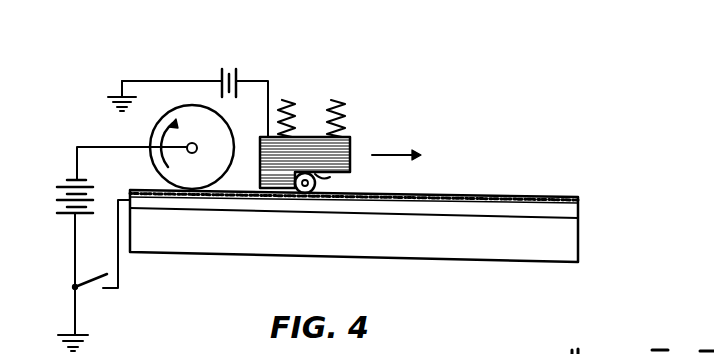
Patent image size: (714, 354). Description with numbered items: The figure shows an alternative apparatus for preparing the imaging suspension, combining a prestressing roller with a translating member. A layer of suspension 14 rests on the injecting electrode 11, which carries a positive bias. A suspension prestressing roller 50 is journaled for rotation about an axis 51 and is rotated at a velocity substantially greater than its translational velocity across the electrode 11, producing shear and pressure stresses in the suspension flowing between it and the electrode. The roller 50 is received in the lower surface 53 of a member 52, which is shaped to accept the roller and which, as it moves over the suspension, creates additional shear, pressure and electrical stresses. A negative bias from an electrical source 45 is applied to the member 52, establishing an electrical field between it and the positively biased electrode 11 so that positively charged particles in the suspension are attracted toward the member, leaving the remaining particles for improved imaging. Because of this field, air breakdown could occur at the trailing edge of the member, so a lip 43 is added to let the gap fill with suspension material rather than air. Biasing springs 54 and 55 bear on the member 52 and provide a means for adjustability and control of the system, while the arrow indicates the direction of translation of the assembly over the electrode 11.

The injecting electrode 11 is at (386, 214).
The suspension 14 is at (367, 214).
The lip 43 is at (262, 192).
The electrical source 45 is at (216, 58).
The suspension prestressing roller 50 is at (300, 196).
The axis 51 is at (308, 203).
The member 52 is at (352, 146).
The lower surface 53 is at (320, 175).
The biasing spring 54 is at (290, 100).
The biasing spring 55 is at (373, 76).